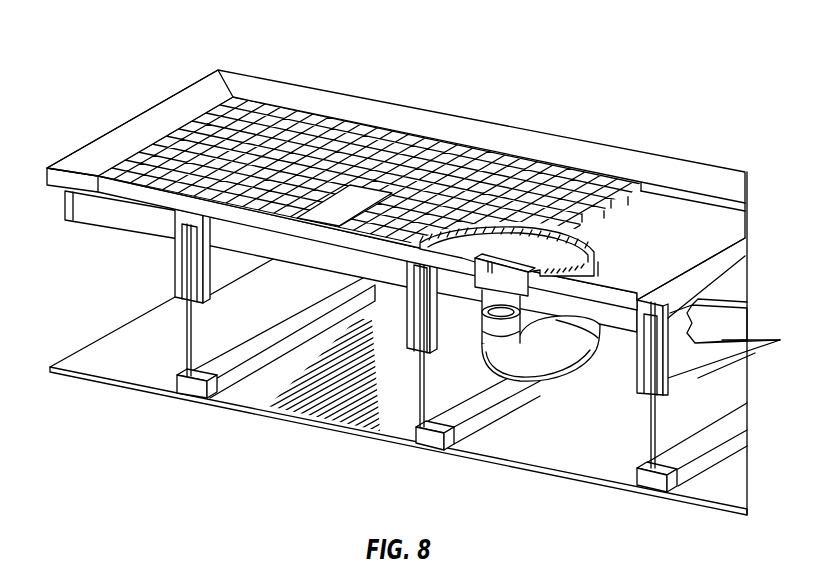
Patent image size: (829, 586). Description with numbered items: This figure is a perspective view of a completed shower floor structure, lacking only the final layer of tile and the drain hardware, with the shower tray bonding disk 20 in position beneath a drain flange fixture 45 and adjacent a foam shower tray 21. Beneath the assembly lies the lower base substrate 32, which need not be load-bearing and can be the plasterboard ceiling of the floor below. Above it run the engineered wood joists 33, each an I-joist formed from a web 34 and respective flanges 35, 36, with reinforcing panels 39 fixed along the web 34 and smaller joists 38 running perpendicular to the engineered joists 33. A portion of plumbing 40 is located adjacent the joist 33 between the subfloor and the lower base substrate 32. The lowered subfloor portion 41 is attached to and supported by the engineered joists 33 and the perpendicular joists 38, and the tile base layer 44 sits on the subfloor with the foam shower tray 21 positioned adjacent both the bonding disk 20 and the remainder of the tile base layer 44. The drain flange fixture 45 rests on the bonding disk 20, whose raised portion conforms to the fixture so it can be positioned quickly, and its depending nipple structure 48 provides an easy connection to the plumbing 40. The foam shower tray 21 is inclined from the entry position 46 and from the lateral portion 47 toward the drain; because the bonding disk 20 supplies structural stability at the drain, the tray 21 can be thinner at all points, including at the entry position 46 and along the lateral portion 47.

The shower tray bonding disk 20 is at (602, 267).
The foam shower tray 21 is at (497, 165).
The lower base substrate 32 is at (140, 369).
The engineered wood joist 33 is at (178, 327).
The web 34 is at (265, 329).
The flange 35 is at (197, 394).
The flange 36 is at (730, 277).
The smaller joists 38 is at (130, 222).
The reinforcing panels 39 is at (245, 294).
The plumbing 40 is at (560, 357).
The lowered subfloor portion 41 is at (94, 196).
The tile base layer 44 is at (596, 160).
The drain flange fixture 45 is at (588, 260).
The entry position 46 is at (127, 112).
The lateral portion 47 is at (316, 84).
The depending nipple structure 48 is at (497, 290).